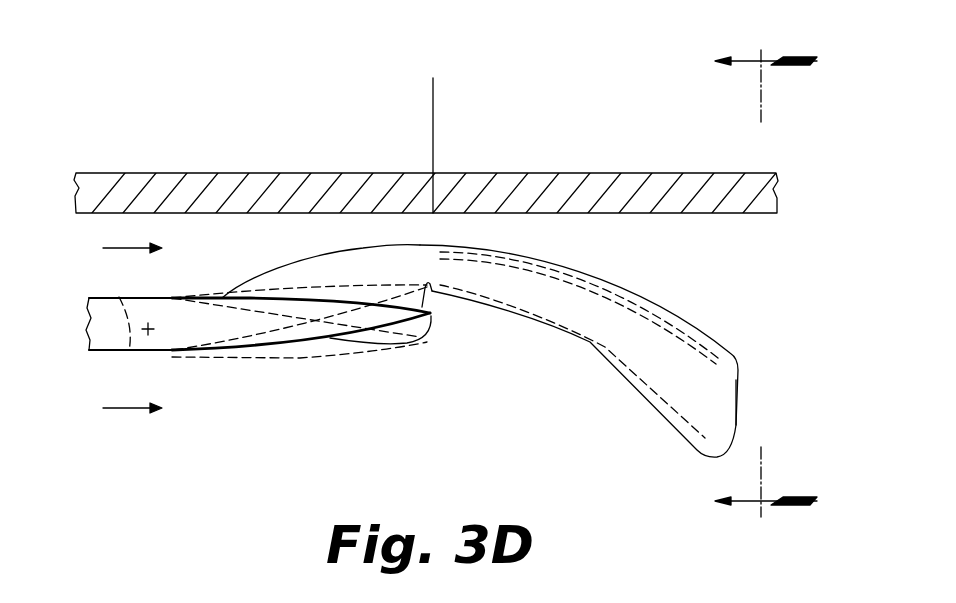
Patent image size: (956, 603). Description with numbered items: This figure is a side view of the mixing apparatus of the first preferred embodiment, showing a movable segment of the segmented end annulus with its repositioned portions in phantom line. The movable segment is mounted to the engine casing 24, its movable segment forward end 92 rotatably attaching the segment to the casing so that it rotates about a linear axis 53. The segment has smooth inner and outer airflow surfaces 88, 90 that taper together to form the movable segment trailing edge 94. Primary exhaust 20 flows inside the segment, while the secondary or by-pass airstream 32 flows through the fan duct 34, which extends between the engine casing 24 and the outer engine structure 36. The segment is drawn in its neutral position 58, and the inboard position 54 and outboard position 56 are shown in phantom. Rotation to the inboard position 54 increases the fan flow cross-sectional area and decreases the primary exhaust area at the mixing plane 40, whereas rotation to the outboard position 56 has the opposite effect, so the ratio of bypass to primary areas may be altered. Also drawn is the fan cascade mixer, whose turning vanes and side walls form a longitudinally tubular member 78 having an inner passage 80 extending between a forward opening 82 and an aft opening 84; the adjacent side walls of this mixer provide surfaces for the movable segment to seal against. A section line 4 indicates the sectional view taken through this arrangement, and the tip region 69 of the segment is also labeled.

The section line 4- 4 is at (757, 283).
The primary exhaust 20 is at (134, 411).
The engine casing 24 is at (90, 323).
The secondary or by-pass airstream 32 is at (132, 251).
The fan duct 34 is at (135, 228).
The outer engine structure 36 is at (643, 193).
The mixing plane 40 is at (441, 123).
The axis 53 is at (152, 331).
The inboard position 54 is at (346, 366).
The outboard position 56 is at (318, 276).
The neutral position 58 is at (361, 293).
The tip 69 is at (433, 317).
The longitudinally tubular member 78 is at (622, 373).
The inner passage 80 is at (650, 356).
The forward opening 82 is at (452, 275).
The aft opening 84 is at (717, 402).
The inner airflow surface 88 is at (283, 343).
The outer airflow surface 90 is at (277, 295).
The movable segment forward end 92 is at (141, 338).
The movable segment trailing edge 94 is at (432, 313).